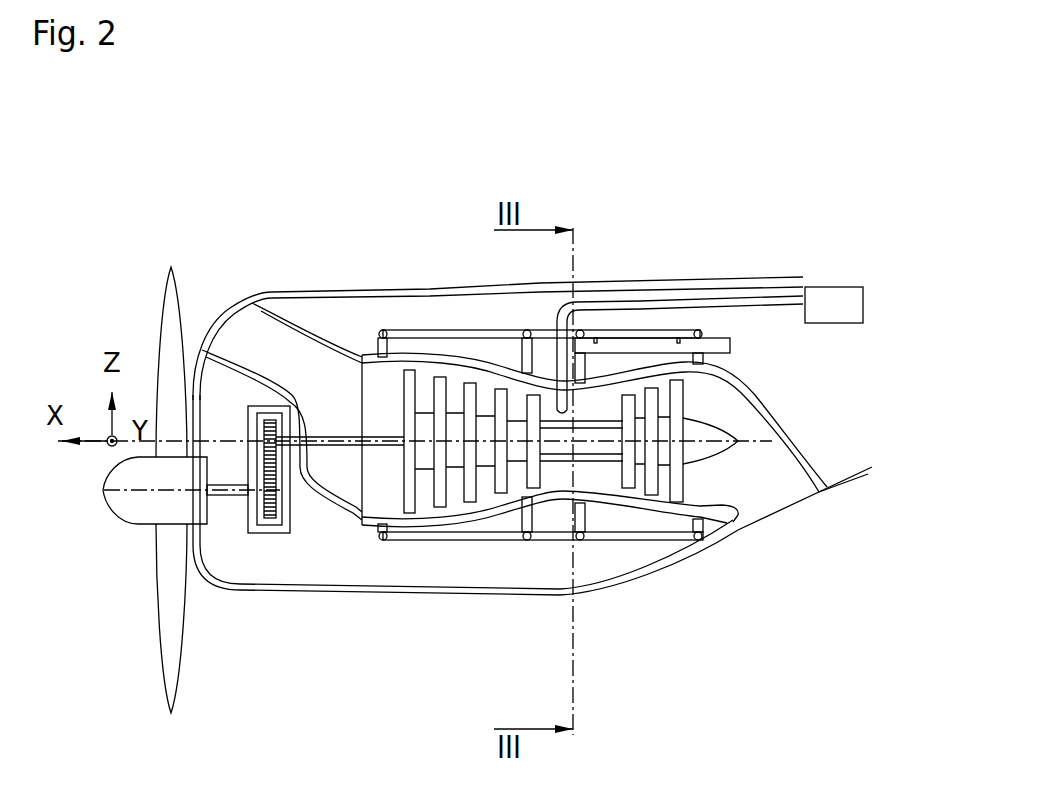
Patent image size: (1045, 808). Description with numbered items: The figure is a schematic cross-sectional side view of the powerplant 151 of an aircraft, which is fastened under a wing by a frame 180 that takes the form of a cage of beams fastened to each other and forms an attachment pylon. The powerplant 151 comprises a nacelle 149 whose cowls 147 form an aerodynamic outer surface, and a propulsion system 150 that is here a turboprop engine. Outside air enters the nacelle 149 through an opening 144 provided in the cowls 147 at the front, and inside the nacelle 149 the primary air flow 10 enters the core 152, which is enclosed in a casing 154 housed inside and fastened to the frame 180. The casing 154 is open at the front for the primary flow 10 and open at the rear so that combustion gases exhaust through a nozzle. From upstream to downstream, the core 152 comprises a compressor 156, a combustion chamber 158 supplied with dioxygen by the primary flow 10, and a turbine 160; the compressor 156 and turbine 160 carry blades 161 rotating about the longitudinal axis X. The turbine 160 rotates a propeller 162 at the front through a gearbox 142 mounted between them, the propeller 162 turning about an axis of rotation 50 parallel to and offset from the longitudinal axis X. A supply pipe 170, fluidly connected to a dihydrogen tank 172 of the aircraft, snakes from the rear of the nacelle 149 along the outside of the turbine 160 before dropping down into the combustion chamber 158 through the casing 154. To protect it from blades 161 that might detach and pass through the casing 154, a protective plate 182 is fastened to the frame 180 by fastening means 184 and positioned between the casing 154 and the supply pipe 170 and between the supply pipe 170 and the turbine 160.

The primary air flow 10 is at (333, 400).
The axis of rotation 50 is at (135, 492).
The gearbox 142 is at (280, 527).
The opening 144 is at (233, 310).
The cowls 147 is at (430, 289).
The nacelle 149 is at (305, 270).
The propulsion system 150 is at (770, 630).
The powerplant 151 is at (180, 213).
The core 152 is at (607, 638).
The casing 154 is at (790, 418).
The compressor 156 is at (470, 490).
The combustion chamber 158 is at (560, 475).
The turbine 160 is at (633, 441).
The blades 161 is at (680, 393).
The propeller 162 is at (173, 572).
The supply pipe 170 is at (762, 297).
The dihydrogen tank 172 is at (835, 305).
The frame 180 is at (670, 536).
The protective plate 182 is at (660, 346).
The fastening means 184 is at (601, 338).